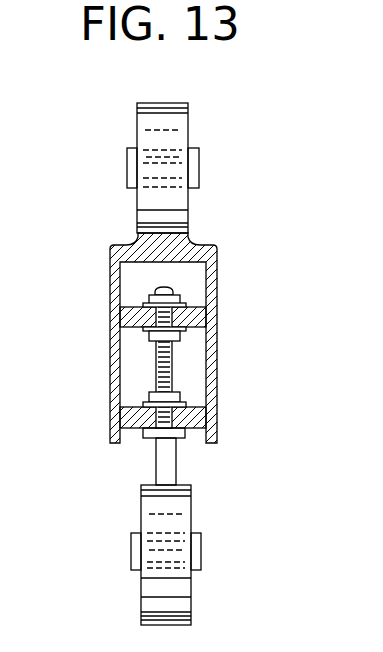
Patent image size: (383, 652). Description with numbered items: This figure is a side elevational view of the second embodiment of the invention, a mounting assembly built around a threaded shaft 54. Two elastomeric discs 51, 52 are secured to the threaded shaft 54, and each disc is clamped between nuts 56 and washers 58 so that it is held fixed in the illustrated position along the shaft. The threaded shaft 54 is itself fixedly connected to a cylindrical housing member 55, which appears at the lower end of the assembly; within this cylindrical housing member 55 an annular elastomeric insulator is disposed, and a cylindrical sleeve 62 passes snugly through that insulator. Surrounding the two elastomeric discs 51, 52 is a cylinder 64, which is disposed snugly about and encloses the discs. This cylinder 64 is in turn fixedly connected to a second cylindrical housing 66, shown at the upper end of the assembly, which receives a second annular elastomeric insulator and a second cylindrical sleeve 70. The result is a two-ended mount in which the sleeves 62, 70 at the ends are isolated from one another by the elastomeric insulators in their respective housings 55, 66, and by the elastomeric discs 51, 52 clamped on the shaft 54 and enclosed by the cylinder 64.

The elastomeric disc 51 is at (128, 317).
The elastomeric disc 52 is at (128, 418).
The threaded shaft 54 is at (157, 362).
The cylindrical housing member 55 is at (155, 507).
The nut 56 is at (178, 297).
The washer 58 is at (178, 333).
The cylindrical sleeve 62 is at (137, 550).
The cylinder 64 is at (122, 273).
The second cylindrical housing 66 is at (155, 125).
The second cylindrical sleeve 70 is at (135, 170).